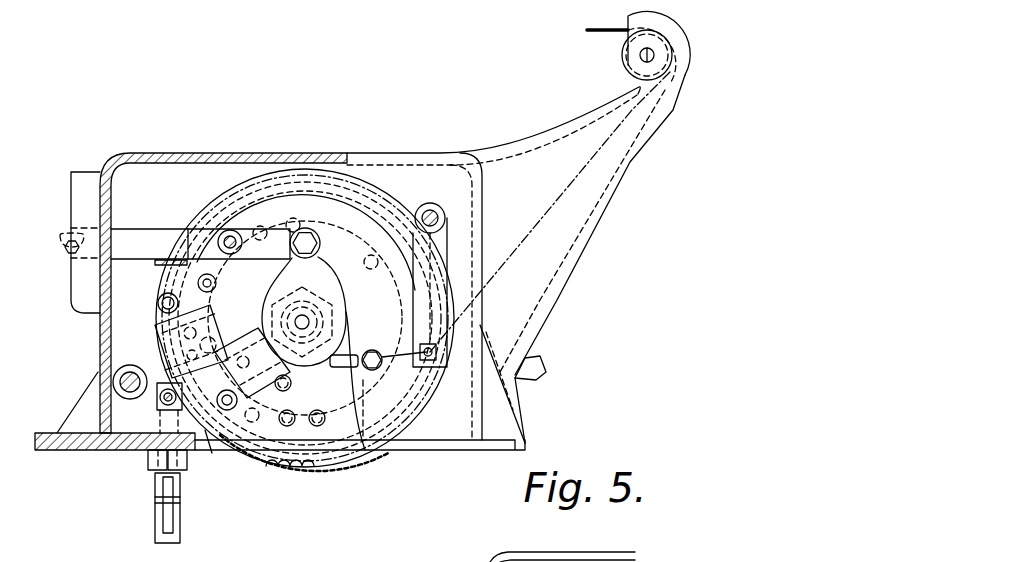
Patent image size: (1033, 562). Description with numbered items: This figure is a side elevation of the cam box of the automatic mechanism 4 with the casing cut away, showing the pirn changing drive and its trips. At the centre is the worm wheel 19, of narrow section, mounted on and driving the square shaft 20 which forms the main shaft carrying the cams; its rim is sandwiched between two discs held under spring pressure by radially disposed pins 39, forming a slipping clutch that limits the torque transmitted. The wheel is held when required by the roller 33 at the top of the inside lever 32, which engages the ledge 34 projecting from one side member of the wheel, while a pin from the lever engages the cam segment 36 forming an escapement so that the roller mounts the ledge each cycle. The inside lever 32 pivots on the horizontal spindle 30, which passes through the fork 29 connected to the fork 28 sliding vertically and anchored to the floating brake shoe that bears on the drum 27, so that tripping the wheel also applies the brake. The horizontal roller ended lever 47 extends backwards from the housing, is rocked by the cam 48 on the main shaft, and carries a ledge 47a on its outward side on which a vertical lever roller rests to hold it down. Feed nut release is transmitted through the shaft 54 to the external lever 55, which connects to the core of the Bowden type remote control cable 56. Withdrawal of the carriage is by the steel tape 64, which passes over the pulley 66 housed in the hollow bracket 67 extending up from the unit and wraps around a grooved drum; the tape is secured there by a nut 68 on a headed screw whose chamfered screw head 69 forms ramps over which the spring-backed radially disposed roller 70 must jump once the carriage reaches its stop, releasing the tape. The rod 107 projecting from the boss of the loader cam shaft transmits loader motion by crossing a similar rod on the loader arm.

The automatic mechanism 4 is at (500, 418).
The worm wheel 19 is at (315, 466).
The square shaft 20 is at (312, 322).
The drum 27 is at (158, 497).
The fork 28 is at (158, 527).
The fork 29 is at (158, 418).
The spindle 30 is at (157, 398).
The inside lever 32 is at (160, 337).
The roller 33 is at (158, 303).
The ledge 34 is at (250, 365).
The cam segment 36 is at (195, 313).
The pins 39 is at (293, 222).
The horizontal roller ended lever 47 is at (132, 240).
The ledge 47a is at (169, 262).
The cam 48 is at (328, 283).
The shaft 54 is at (445, 218).
The lever 55 is at (440, 283).
The Bowden type remote control cable 56 is at (350, 367).
The steel tape 64 is at (588, 30).
The pulley 66 is at (625, 65).
The bracket 67 is at (678, 70).
The nut 68 is at (150, 450).
The screw head 69 is at (212, 453).
The roller 70 is at (265, 467).
The rod 107 is at (537, 372).